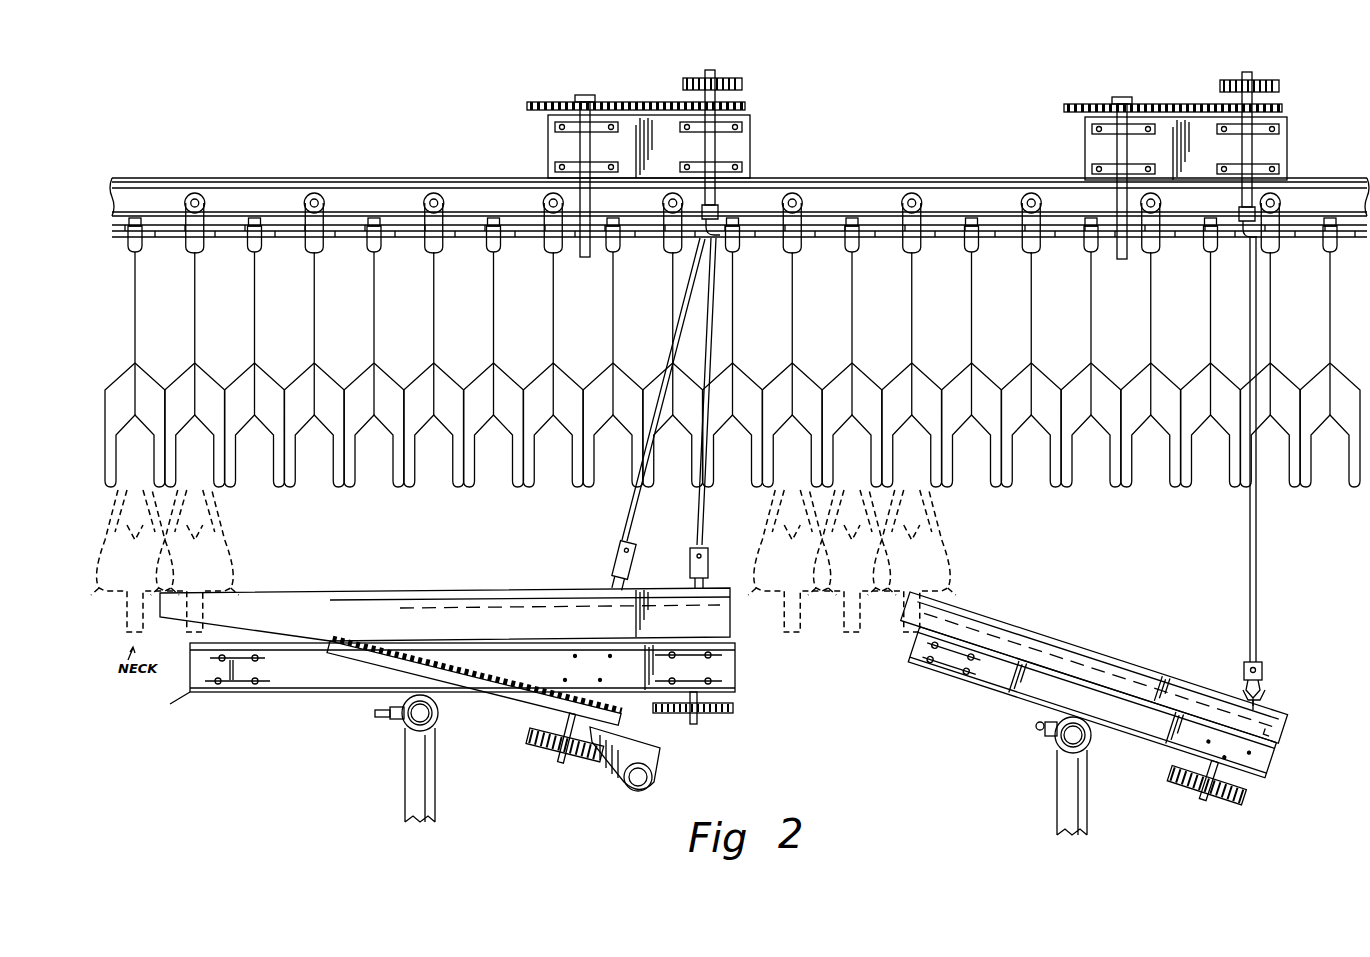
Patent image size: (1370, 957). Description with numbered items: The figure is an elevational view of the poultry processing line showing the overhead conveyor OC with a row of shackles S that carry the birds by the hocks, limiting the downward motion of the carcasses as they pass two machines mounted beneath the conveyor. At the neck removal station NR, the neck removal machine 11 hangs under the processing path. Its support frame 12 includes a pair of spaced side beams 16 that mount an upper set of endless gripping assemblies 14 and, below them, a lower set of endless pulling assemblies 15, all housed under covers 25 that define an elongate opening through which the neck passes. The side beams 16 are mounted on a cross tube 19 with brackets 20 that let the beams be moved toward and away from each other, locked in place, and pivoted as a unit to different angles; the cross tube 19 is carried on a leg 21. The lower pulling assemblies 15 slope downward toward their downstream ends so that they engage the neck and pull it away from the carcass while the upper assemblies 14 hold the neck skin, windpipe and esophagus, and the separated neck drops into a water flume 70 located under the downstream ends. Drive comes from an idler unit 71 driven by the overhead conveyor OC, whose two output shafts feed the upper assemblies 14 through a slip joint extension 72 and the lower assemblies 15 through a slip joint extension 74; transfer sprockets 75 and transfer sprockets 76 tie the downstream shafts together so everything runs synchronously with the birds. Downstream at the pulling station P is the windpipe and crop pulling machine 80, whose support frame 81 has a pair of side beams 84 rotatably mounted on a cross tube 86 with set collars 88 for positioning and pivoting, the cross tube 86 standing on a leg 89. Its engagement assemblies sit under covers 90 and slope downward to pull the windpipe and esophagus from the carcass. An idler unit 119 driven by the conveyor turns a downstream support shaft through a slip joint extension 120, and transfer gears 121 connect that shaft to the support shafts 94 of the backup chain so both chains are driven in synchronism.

The overhead conveyor OC is at (297, 181).
The shackles S is at (252, 316).
The idler unit 71 is at (558, 97).
The idler unit 119 is at (1171, 97).
The slip joint extension 74 is at (631, 518).
The slip joint extension 72 is at (701, 513).
The slip joint extension 120 is at (1258, 608).
The neck removal machine 11 is at (445, 692).
The upper set of endless gripping assemblies 14 is at (445, 602).
The covers 25 is at (451, 601).
The side beams 16 is at (296, 703).
The support frame 12 is at (187, 701).
The lower set of endless pulling assemblies 15 is at (468, 711).
The transfer sprockets 76 is at (567, 738).
The cross tube 19 is at (414, 758).
The brackets 20 is at (384, 720).
The leg 21 is at (437, 800).
The water flume 70 is at (655, 762).
The transfer sprockets 75 is at (711, 716).
The neck removal station NR is at (218, 804).
The windpipe and crop pulling machine 80 is at (1048, 774).
The covers 90 is at (1046, 774).
The support frame 81 is at (1092, 702).
The side beams 84 is at (952, 658).
The transfer gears 121 is at (1208, 780).
The cross tube 86 is at (1058, 776).
The set collars 88 is at (1046, 740).
The leg 89 is at (1085, 815).
The support shafts 94 is at (1255, 686).
The pulling station P is at (945, 777).